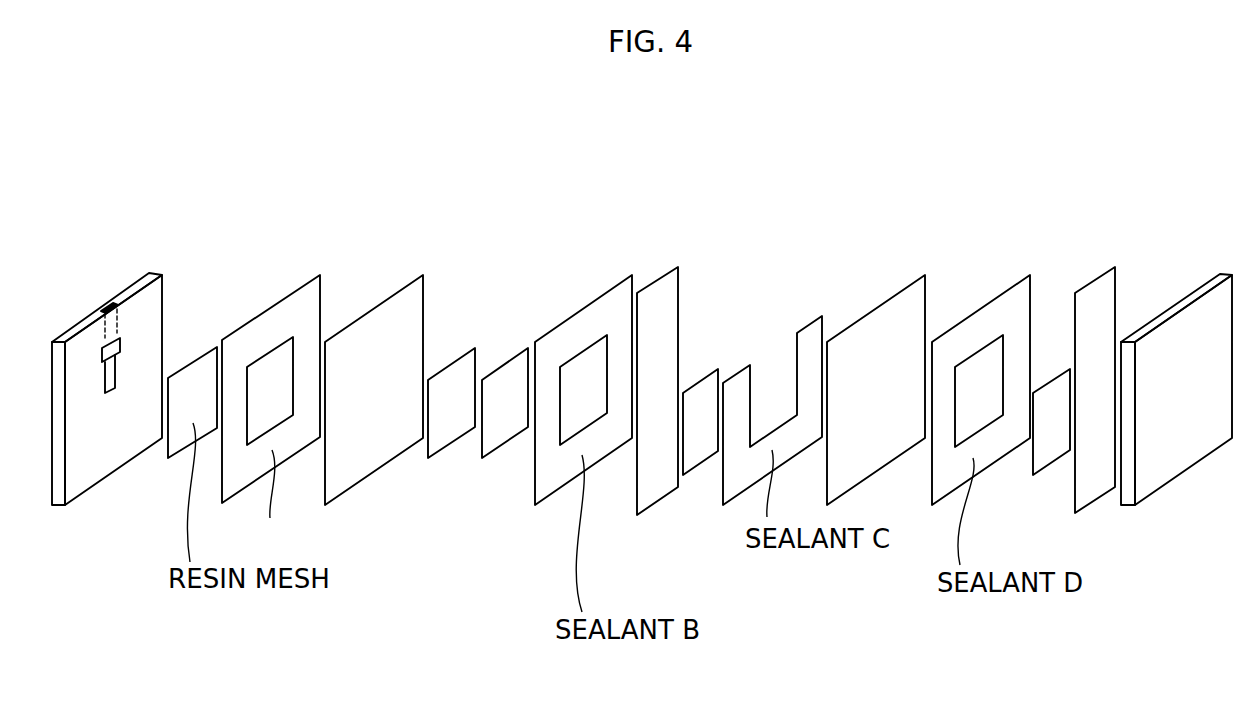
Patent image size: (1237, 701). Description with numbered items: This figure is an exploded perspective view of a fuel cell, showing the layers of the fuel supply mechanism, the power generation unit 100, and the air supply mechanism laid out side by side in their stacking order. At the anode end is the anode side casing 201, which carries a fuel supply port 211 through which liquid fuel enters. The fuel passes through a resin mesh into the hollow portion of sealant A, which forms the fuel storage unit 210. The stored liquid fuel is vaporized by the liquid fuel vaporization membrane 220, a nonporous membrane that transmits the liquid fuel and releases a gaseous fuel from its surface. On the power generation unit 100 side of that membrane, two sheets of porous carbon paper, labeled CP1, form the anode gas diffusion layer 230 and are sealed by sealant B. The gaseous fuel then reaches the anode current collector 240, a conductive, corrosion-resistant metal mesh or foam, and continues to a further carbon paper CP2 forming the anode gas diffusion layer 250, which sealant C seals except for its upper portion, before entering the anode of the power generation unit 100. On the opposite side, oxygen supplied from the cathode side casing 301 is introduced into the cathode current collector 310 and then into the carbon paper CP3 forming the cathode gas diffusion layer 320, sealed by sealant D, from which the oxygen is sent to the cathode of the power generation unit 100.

The power generation unit 100 is at (873, 332).
The anode side casing 201 is at (117, 448).
The fuel supply port 211 is at (104, 303).
The fuel storage unit 210 is at (270, 367).
The liquid fuel vaporization membrane 220 is at (375, 328).
The anode gas diffusion layer 230 is at (503, 430).
The anode current collector 240 is at (660, 298).
The anode gas diffusion layer 250 is at (700, 450).
The cathode current collector 310 is at (1094, 297).
The cathode gas diffusion layer 320 is at (1052, 450).
The cathode side casing 301 is at (1183, 325).